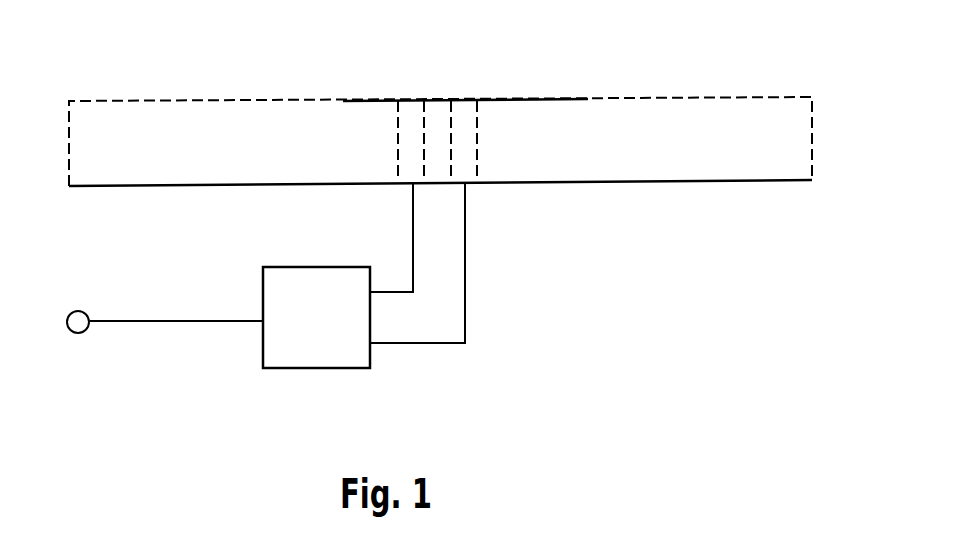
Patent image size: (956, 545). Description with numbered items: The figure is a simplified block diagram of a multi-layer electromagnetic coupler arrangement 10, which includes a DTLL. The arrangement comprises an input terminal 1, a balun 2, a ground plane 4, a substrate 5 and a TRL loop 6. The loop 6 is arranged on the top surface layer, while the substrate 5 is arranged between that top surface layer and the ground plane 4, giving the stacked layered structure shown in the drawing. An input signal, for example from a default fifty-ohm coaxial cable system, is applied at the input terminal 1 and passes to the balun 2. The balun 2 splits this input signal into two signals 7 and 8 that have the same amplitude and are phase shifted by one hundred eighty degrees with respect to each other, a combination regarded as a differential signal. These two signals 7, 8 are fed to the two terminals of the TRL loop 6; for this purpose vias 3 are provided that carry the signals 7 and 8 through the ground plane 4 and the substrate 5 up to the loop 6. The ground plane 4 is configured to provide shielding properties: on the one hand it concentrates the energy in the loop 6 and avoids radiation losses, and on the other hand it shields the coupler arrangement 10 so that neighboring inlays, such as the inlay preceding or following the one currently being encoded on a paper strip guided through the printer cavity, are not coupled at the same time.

The input terminal 1 is at (83, 327).
The balun 2 is at (338, 355).
The vias 3 is at (417, 155).
The ground plane 4 is at (722, 181).
The substrate 5 is at (762, 150).
The TRL loop 6 is at (535, 99).
The signal 7 is at (465, 305).
The signal 8 is at (412, 273).
The electromagnetic coupler arrangement 10 is at (130, 30).